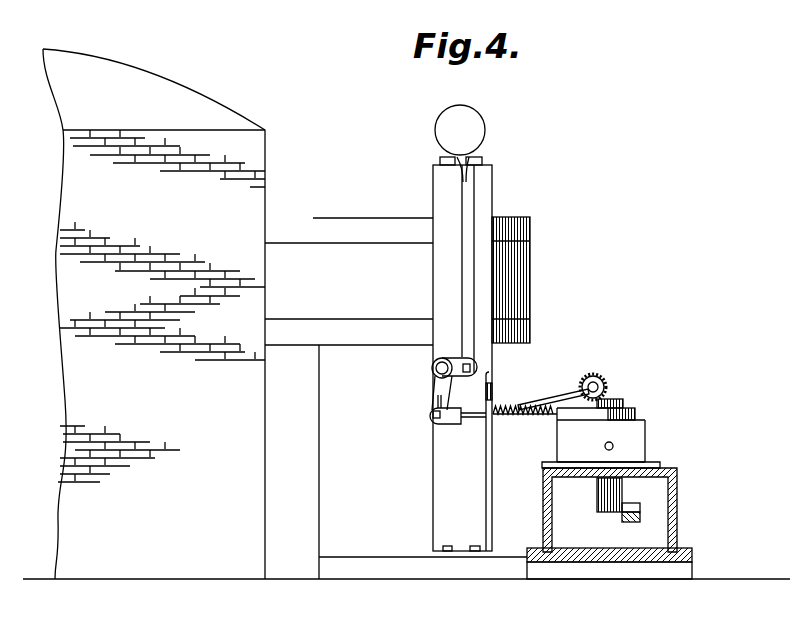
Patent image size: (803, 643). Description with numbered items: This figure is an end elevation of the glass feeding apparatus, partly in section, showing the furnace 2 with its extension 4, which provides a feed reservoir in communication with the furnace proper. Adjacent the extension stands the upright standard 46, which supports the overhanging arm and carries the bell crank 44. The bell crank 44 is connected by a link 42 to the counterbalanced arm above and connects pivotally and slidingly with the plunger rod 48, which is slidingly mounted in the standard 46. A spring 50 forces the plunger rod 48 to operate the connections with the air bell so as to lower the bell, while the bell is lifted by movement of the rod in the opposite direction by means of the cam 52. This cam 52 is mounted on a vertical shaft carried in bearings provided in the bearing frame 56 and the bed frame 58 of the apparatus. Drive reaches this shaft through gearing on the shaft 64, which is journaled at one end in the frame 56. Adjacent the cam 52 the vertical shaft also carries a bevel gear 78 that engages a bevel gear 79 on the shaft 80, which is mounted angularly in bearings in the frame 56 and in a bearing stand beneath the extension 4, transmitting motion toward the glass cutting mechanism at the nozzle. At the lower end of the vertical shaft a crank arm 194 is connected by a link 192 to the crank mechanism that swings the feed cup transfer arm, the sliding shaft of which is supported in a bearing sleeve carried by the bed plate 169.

The furnace 2 is at (265, 143).
The extension 4 is at (298, 222).
The link 42 is at (462, 292).
The standard 46 is at (485, 192).
The bell crank 44 is at (433, 388).
The plunger rod 48 is at (447, 422).
The spring 50 is at (500, 408).
The shaft 80 is at (550, 395).
The bevel gear 79 is at (598, 380).
The bevel gear 78 is at (620, 400).
The cam 52 is at (640, 410).
The bearing frame 56 is at (640, 437).
The shaft 64 is at (605, 446).
The bed frame 58 is at (678, 488).
The crank arm 194 is at (640, 508).
The link 192 is at (638, 516).
The bed plate 169 is at (638, 565).